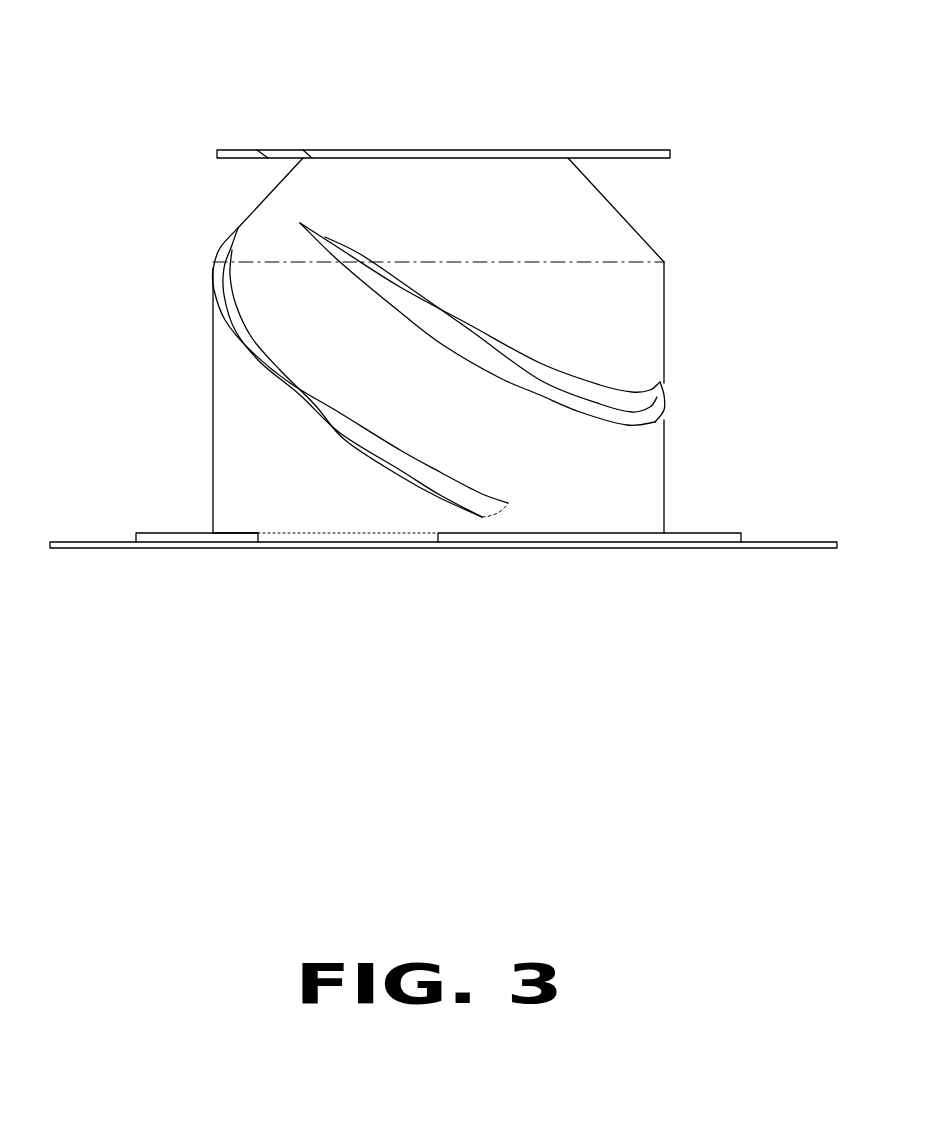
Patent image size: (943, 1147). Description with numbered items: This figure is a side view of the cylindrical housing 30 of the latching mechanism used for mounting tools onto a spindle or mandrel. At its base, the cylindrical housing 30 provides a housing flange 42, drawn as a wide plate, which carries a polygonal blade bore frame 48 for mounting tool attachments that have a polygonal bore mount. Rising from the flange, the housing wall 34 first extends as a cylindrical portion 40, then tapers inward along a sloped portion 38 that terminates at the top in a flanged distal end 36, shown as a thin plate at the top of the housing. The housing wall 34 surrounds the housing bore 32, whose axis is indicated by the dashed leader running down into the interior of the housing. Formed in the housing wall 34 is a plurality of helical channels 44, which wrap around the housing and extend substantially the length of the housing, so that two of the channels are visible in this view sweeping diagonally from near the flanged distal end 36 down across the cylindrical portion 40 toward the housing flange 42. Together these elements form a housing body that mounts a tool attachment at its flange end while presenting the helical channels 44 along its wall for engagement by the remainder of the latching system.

The cylindrical housing 30 is at (695, 268).
The housing bore 32 is at (420, 198).
The housing wall 34 is at (664, 452).
The flanged distal end 36 is at (217, 150).
The sloped portion 38 is at (247, 218).
The cylindrical portion 40 is at (214, 490).
The housing flange 42 is at (90, 550).
The helical channel 44 is at (285, 150).
The polygonal blade bore frame 48 is at (150, 537).